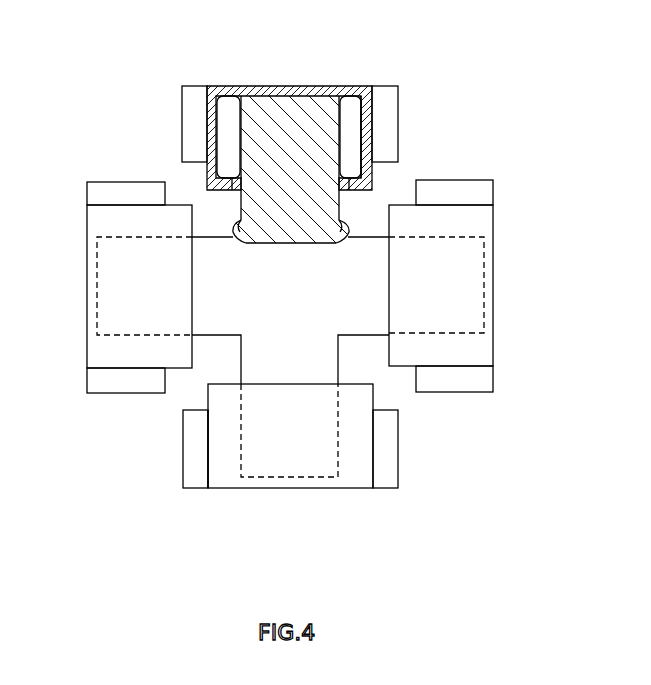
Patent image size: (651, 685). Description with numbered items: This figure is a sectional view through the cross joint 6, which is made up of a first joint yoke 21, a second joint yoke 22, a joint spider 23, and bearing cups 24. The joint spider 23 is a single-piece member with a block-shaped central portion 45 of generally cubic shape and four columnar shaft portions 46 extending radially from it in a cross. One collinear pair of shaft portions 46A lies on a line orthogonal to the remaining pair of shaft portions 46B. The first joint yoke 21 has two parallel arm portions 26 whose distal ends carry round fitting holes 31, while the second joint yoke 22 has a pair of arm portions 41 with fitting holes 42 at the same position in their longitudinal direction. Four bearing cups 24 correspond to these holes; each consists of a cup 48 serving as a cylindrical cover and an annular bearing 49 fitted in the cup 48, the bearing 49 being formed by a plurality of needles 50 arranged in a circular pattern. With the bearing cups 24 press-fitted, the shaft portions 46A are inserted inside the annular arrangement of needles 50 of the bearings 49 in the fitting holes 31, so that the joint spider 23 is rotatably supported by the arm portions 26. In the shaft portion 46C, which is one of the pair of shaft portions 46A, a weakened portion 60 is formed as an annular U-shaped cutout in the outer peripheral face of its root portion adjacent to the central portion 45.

The cross joint 6 is at (305, 290).
The first joint yoke 21 is at (440, 487).
The second joint yoke 22 is at (527, 180).
The joint spider 23 is at (340, 353).
The bearing cup 24 is at (305, 290).
The arm portion 26 is at (349, 304).
The fitting hole 31 is at (367, 95).
The arm portion 41 is at (306, 301).
The fitting hole 42 is at (100, 347).
The central portion 45 is at (288, 292).
The shaft portion 46 is at (290, 325).
The shaft portion 46A is at (313, 212).
The shaft portion 46B is at (205, 268).
The shaft portion 46C is at (295, 153).
The cup 48 is at (285, 286).
The bearing 49 is at (274, 96).
The needle 50 is at (352, 102).
The weakened portion 60 is at (230, 240).